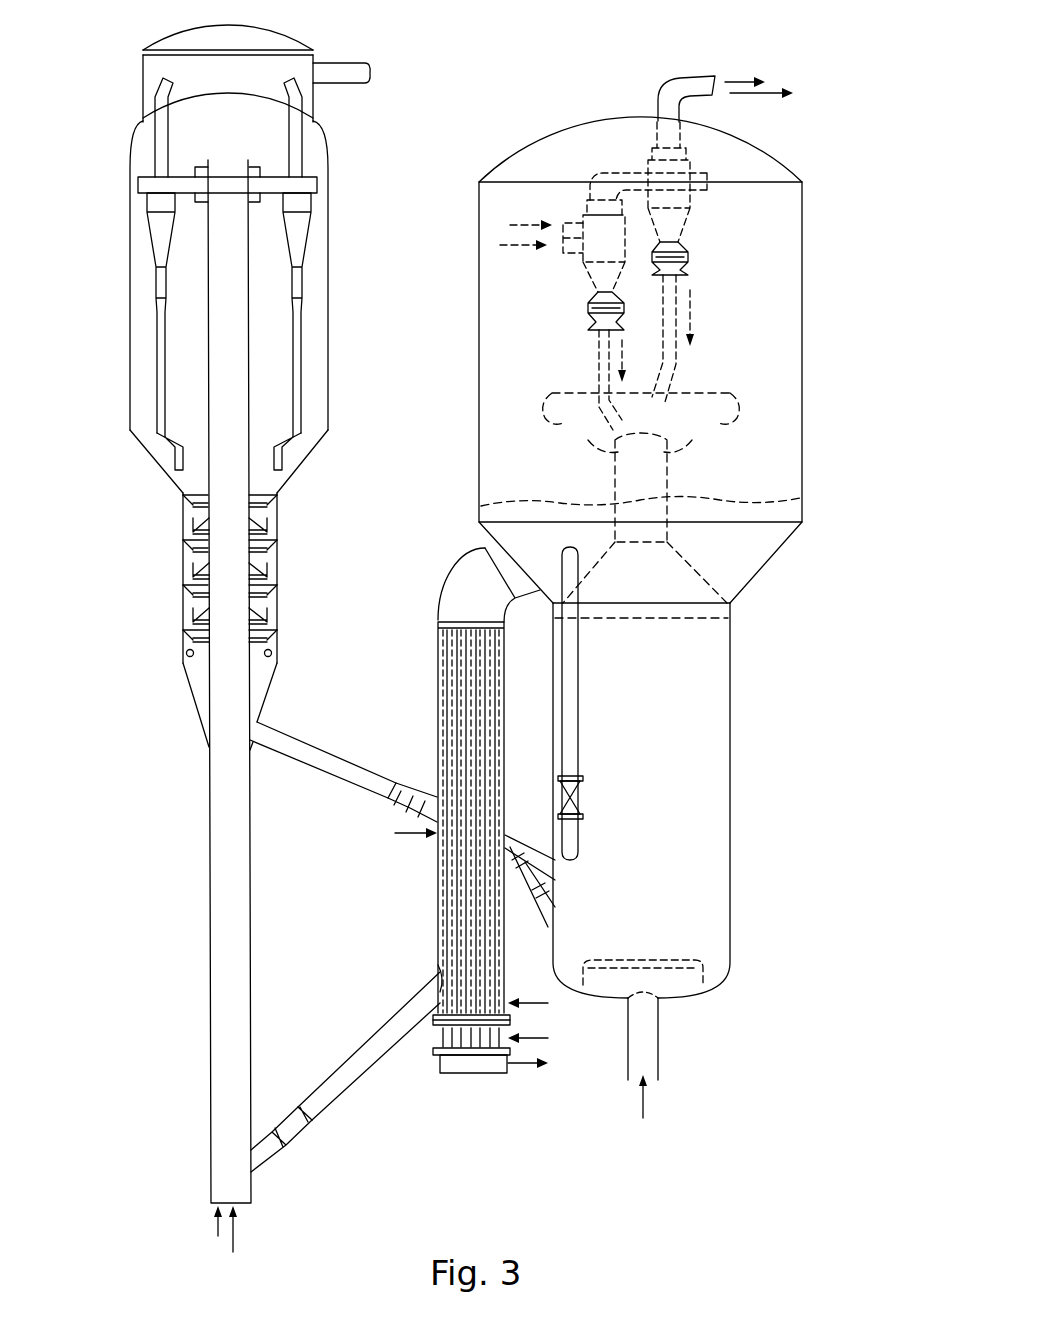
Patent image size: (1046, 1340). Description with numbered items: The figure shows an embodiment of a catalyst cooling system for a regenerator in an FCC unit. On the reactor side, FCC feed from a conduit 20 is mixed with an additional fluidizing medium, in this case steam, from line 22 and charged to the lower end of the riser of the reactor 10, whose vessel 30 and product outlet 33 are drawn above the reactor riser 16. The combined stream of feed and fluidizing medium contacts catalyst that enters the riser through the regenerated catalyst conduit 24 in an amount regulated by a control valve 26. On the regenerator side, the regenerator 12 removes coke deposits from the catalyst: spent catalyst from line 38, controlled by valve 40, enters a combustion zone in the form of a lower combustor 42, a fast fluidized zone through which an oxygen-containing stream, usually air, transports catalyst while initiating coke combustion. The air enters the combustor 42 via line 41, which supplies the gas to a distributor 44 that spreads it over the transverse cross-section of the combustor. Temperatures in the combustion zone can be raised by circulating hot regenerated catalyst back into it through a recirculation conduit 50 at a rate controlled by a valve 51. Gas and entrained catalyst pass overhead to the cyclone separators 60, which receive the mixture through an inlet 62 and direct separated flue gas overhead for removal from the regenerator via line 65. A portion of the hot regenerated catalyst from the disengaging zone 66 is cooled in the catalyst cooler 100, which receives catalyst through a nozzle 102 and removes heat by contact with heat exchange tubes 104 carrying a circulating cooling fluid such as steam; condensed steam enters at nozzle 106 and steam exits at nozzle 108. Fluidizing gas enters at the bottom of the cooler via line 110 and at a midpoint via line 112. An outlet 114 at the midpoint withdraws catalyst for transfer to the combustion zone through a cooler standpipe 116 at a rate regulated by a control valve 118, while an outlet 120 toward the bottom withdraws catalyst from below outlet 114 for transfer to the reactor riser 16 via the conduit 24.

The reactor 10 is at (120, 411).
The regenerator 12 is at (815, 412).
The reactor riser 16 is at (200, 970).
The conduit 20 is at (236, 1240).
The line 22 is at (216, 1227).
The regenerated catalyst conduit 24 is at (335, 1096).
The control valve 26 is at (288, 1143).
The reactor vessel 30 is at (330, 325).
The product outlet 33 is at (345, 62).
The line 38 is at (278, 716).
The valve 40 is at (404, 790).
The line 41 is at (657, 1060).
The lower combustor 42 is at (695, 872).
The distributor 44 is at (735, 975).
The recirculation conduit 50 is at (580, 700).
The valve 51 is at (585, 785).
The cyclone separators 60 is at (690, 229).
The inlet 62 is at (571, 236).
The line 65 is at (685, 76).
The disengaging zone 66 is at (728, 572).
The catalyst cooler 100 is at (434, 648).
The nozzle 102 is at (522, 600).
The heat exchange tubes 104 is at (452, 900).
The nozzle 106 is at (550, 1037).
The nozzle 108 is at (520, 1066).
The line 110 is at (533, 1003).
The line 112 is at (412, 834).
The outlet 114 is at (505, 785).
The cooler standpipe 116 is at (507, 837).
The control valve 118 is at (553, 884).
The outlet 120 is at (441, 960).